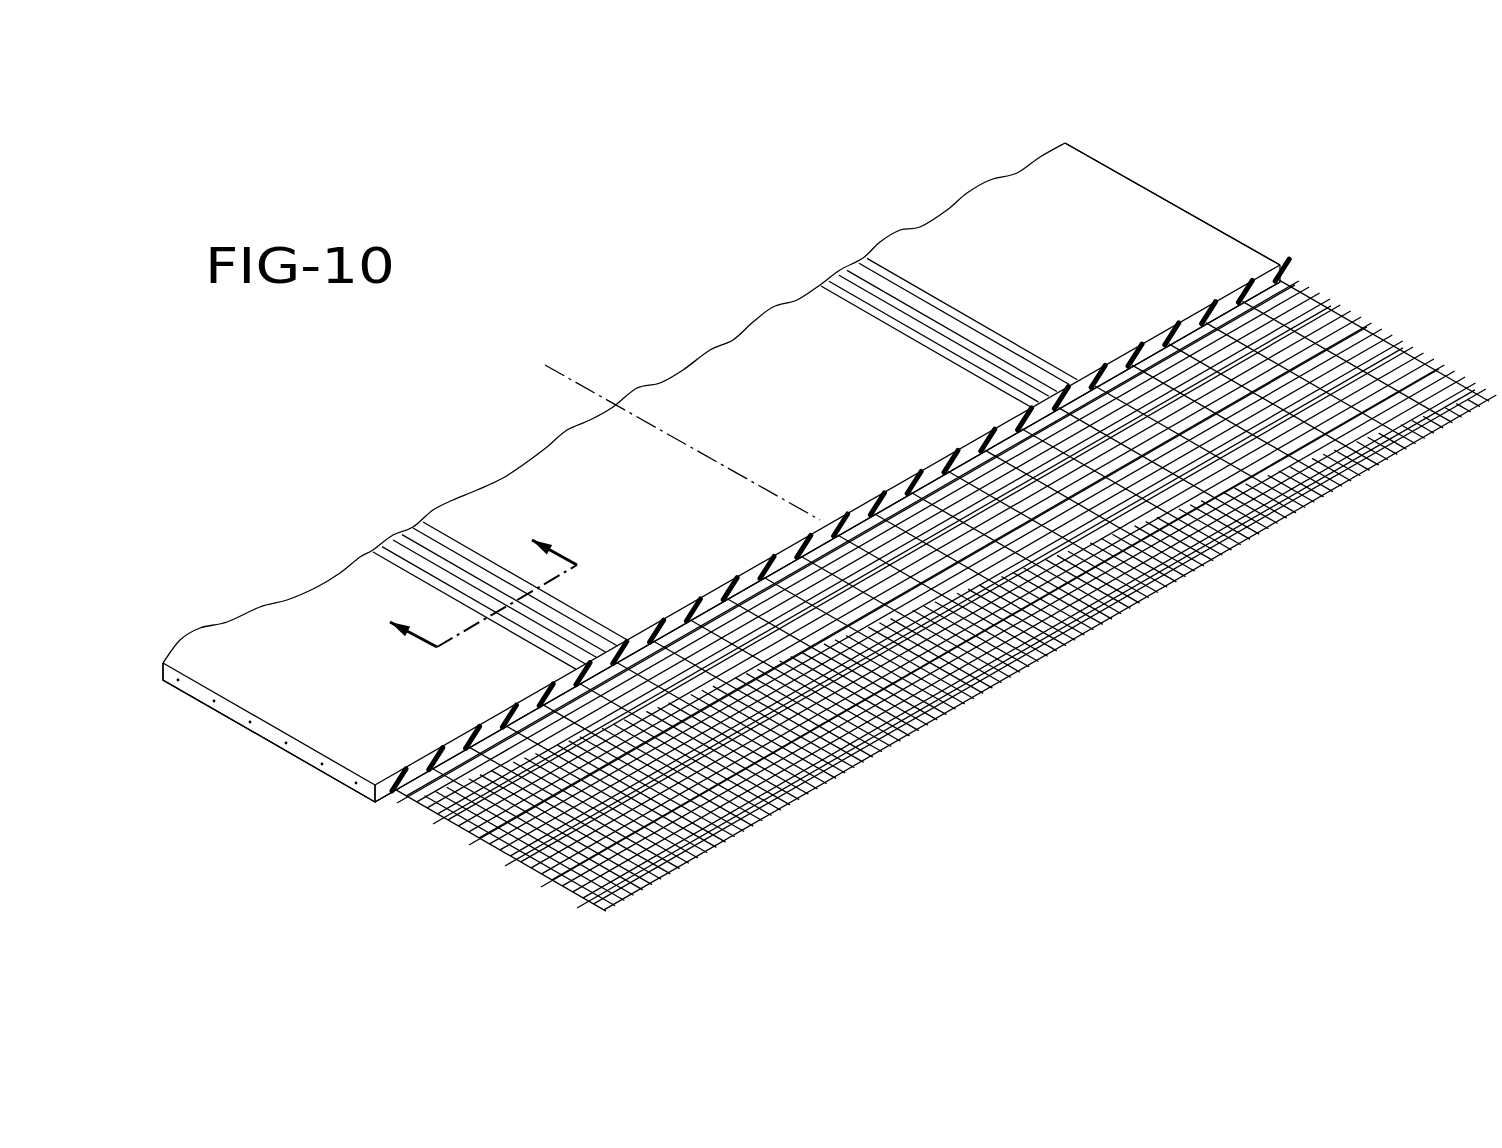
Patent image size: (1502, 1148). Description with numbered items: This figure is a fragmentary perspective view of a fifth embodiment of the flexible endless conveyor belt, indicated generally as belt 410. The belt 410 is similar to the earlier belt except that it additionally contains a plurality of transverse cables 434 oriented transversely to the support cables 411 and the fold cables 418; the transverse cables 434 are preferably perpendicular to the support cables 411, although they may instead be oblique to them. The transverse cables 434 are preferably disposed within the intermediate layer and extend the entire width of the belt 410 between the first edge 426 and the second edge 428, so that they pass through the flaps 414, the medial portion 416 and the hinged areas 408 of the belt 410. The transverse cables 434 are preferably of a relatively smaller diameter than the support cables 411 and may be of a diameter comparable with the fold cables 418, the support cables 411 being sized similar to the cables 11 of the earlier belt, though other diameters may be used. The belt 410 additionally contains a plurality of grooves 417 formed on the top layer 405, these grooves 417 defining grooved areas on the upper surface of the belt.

The top layer 405 is at (1194, 209).
The second edge 428 is at (1135, 180).
The flaps 414 is at (1005, 208).
The medial portion 416 is at (543, 480).
The flexible endless conveyor belt 410 is at (665, 298).
The hinged areas 408 is at (846, 246).
The grooves 417 is at (822, 285).
The support cables 11 is at (468, 583).
The first edge 426 is at (262, 736).
The transverse cables 434 is at (322, 766).
The support cables 411 is at (458, 830).
The fold cables 418 is at (857, 777).